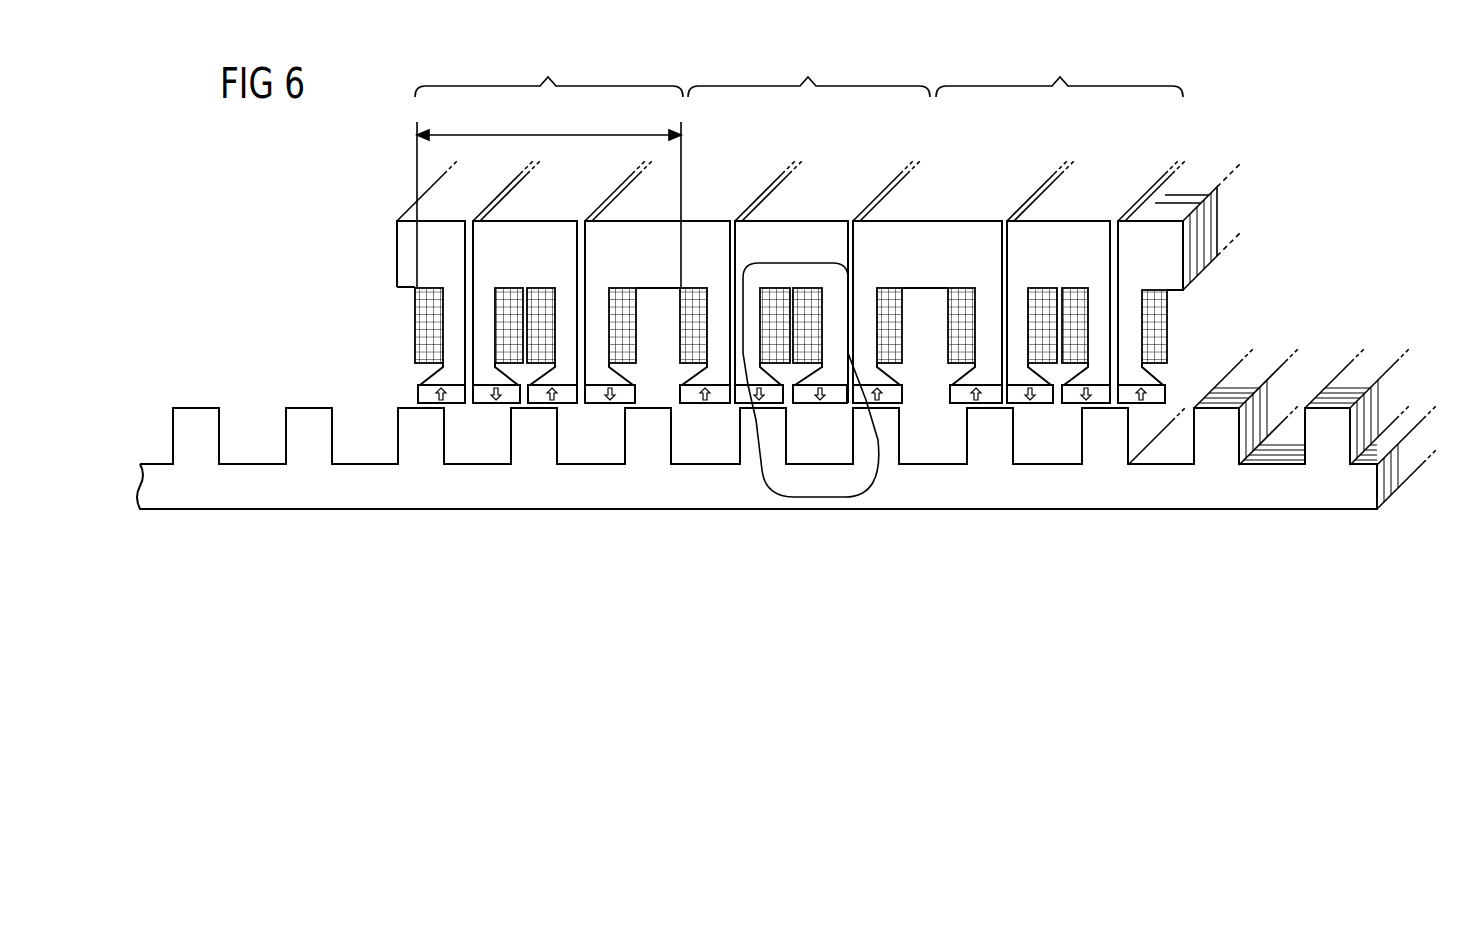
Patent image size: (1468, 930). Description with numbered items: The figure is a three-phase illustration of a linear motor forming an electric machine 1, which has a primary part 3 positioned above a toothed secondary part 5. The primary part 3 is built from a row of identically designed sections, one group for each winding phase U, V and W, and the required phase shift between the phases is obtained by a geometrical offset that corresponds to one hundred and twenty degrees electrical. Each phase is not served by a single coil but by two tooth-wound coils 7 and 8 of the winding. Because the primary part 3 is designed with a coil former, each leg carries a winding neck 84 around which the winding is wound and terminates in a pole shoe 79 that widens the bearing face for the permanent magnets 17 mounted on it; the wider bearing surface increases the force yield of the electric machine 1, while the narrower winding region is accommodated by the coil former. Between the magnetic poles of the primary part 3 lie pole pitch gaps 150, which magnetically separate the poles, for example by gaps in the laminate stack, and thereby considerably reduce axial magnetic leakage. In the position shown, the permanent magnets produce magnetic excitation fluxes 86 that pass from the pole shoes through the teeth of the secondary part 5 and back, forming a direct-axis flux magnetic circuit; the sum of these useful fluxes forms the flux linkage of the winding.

The electric machine 1 is at (1362, 224).
The primary part 3 is at (410, 252).
The secondary part 5 is at (1325, 488).
The tooth-wound coil 7 is at (1043, 298).
The tooth-wound coil 8 is at (1157, 322).
The permanent magnets 17 is at (1153, 520).
The pole shoe 79 is at (598, 368).
The winding neck 84 is at (447, 323).
The magnetic excitation fluxes 86 is at (820, 500).
The pole pitch gaps 150 is at (1115, 240).